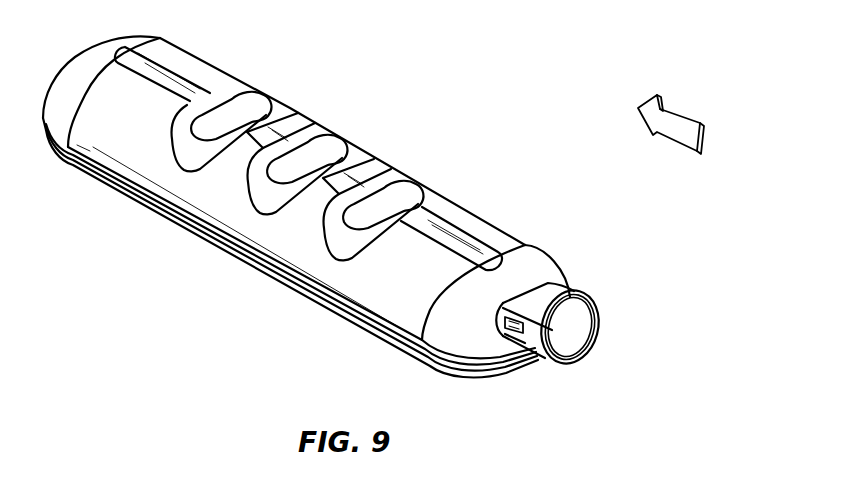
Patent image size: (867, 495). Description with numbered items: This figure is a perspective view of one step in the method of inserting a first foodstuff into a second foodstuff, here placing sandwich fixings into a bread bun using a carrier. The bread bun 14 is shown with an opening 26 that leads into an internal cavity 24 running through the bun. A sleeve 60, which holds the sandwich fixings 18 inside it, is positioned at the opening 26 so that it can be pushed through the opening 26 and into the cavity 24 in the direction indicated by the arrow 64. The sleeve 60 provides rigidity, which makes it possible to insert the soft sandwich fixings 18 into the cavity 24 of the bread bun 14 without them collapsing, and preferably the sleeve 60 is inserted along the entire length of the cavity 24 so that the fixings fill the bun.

The bread bun 14 is at (342, 156).
The sandwich fixings 18 is at (552, 355).
The cavity 24 is at (504, 304).
The opening 26 is at (535, 279).
The sleeve 60 is at (575, 296).
The arrow 64 is at (682, 126).